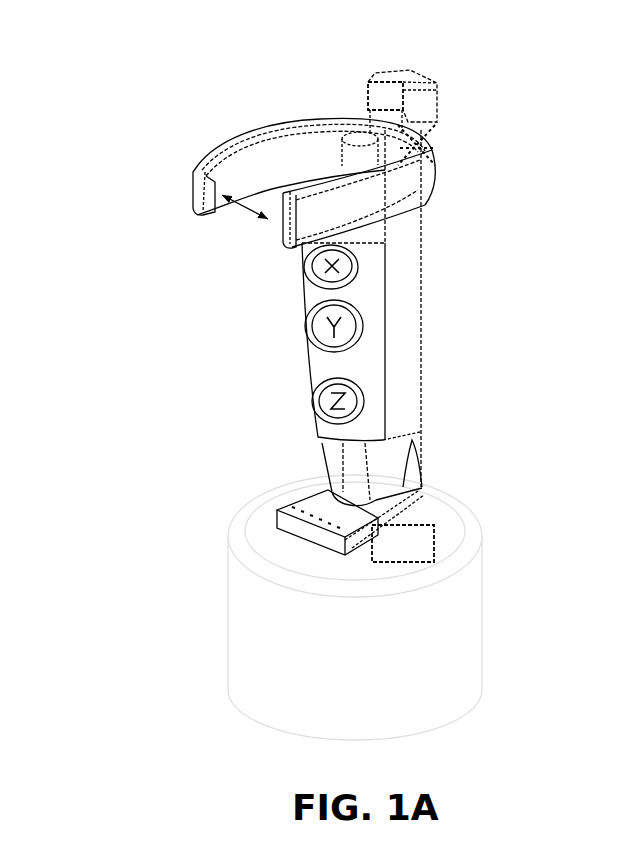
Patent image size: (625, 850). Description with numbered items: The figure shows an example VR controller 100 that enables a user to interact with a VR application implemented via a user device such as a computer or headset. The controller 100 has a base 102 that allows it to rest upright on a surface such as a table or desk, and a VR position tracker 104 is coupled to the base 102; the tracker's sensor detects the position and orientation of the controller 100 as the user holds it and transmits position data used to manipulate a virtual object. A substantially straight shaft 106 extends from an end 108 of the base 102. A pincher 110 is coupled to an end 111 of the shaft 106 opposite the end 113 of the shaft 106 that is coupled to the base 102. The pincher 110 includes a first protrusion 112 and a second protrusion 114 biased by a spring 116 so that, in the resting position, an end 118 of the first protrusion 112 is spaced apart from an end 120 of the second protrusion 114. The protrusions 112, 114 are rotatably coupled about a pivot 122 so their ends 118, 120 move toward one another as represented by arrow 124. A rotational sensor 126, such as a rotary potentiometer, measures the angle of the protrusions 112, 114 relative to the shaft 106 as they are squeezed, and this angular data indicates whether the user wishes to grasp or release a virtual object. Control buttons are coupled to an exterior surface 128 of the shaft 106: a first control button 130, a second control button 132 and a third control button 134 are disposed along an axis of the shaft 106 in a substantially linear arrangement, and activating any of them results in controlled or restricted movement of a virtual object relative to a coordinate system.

The controller 100 is at (164, 60).
The base 102 is at (208, 518).
The VR position tracker 104 is at (403, 543).
The shaft 106 is at (425, 312).
The end of the base 108 is at (265, 490).
The pincher 110 is at (427, 70).
The end of the shaft 111 is at (423, 220).
The first protrusion 112 is at (345, 170).
The end of the shaft 113 is at (423, 488).
The second protrusion 114 is at (235, 125).
The spring 116 is at (420, 143).
The end of the first protrusion 118 is at (300, 218).
The end of the second protrusion 120 is at (198, 165).
The pivot 122 is at (423, 108).
The arrow 124 is at (235, 205).
The rotational sensor 126 is at (368, 90).
The exterior surface of the shaft 128 is at (405, 427).
The first control button 130 is at (290, 262).
The second control button 132 is at (298, 328).
The third control button 134 is at (298, 392).